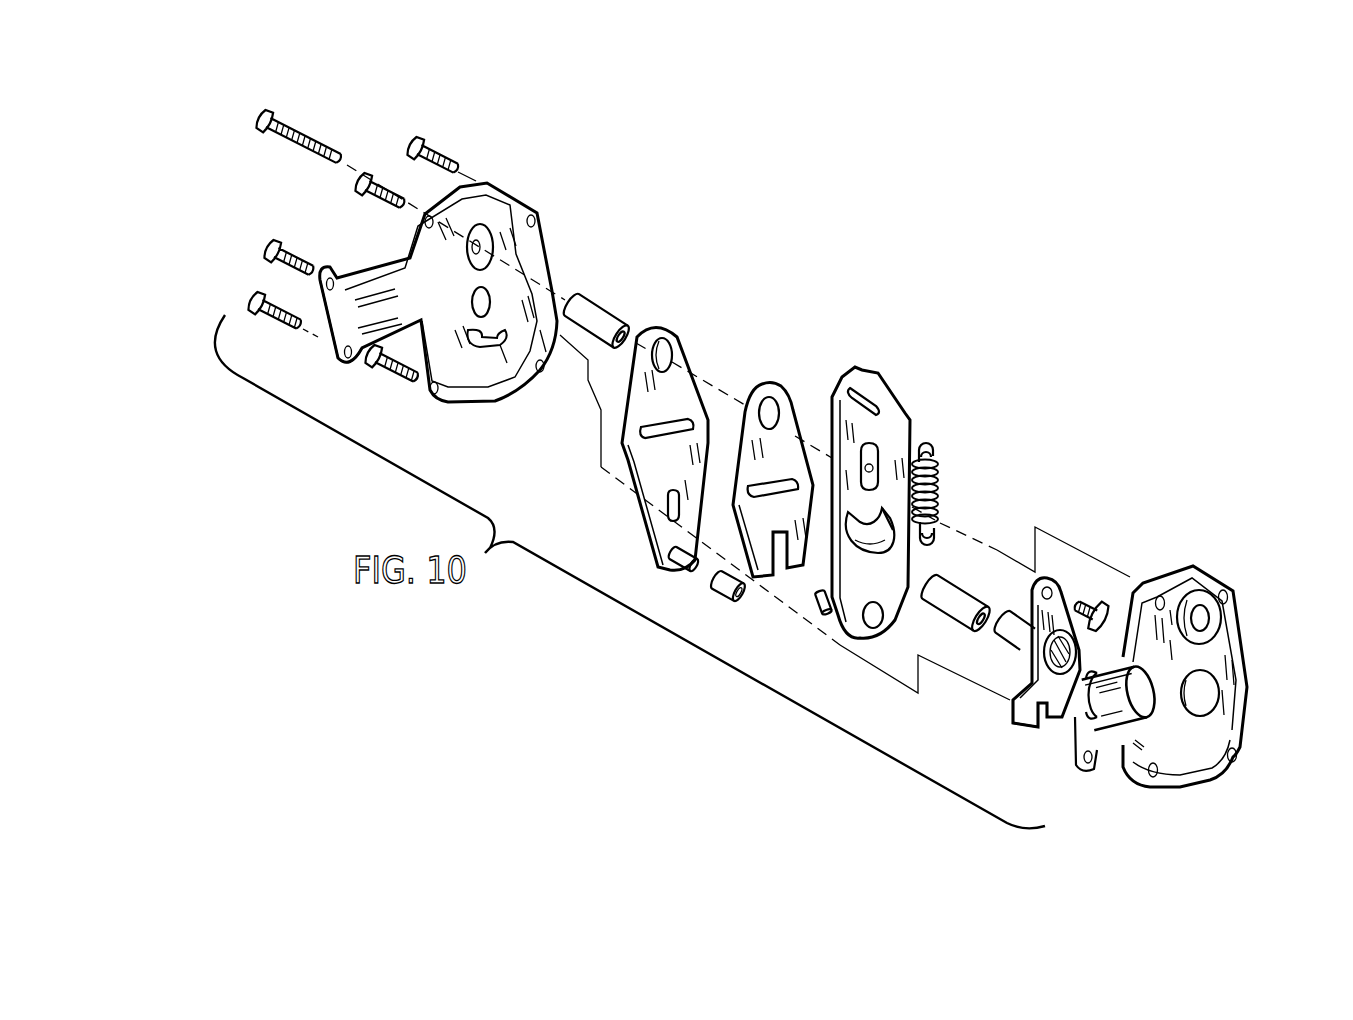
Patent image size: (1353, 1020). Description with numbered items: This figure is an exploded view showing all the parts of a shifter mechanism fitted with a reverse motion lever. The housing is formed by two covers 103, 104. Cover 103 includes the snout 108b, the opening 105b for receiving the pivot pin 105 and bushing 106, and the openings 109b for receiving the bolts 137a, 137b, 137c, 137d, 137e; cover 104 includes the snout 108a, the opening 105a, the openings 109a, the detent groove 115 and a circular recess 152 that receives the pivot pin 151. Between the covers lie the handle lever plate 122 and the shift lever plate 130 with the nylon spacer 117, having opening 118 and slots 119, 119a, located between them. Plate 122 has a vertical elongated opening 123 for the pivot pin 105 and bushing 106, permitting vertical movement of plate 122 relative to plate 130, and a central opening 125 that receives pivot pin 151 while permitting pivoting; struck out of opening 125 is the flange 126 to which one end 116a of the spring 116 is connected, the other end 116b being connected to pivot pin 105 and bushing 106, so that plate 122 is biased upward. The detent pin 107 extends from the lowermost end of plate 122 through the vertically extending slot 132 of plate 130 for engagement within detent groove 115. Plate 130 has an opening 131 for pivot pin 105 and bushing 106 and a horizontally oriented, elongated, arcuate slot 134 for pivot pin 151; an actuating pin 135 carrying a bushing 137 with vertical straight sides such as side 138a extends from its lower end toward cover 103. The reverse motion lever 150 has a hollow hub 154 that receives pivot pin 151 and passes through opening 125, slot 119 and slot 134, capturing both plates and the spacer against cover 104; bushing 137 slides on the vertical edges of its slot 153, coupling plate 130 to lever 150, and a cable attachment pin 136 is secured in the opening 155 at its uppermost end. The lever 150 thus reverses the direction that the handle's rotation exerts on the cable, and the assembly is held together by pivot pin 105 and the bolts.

The cover 103 is at (1173, 566).
The cover 104 is at (513, 184).
The pivot pin 105 is at (297, 120).
The opening 105a is at (477, 244).
The opening 105b is at (1208, 618).
The bushing 106 is at (590, 303).
The detent pin 107 is at (822, 606).
The snout 108a is at (345, 358).
The snout 108b is at (1112, 725).
The openings 109a is at (424, 224).
The openings 109b is at (1165, 598).
The detent groove 115 is at (480, 348).
The spring 116 is at (936, 490).
The spring end 116a is at (940, 538).
The spring end 116b is at (930, 446).
The nylon spacer 117 is at (770, 388).
The opening 118 is at (776, 400).
The slot 119 is at (784, 480).
The slot 119a is at (779, 565).
The handle lever plate 122 is at (878, 378).
The elongated opening 123 is at (878, 446).
The opening 125 is at (850, 540).
The flange 126 is at (888, 532).
The shift lever plate 130 is at (686, 352).
The opening 131 is at (673, 355).
The slot 132 is at (667, 507).
The arcuate slot 134 is at (634, 432).
The actuating pin 135 is at (690, 560).
The cable attachment pin 136 is at (1092, 600).
The bushing 137 is at (709, 601).
The bolt 137a is at (440, 150).
The bolt 137b is at (360, 196).
The bolt 137c is at (272, 248).
The bolt 137d is at (275, 300).
The bolt 137e is at (400, 377).
The vertical straight side 138a is at (730, 594).
The reverse motion lever 150 is at (1056, 602).
The pivot pin 151 is at (940, 592).
The circular recess 152 is at (470, 300).
The slot 153 is at (1036, 729).
The hollow hub 154 is at (1005, 652).
The opening 155 is at (1047, 587).